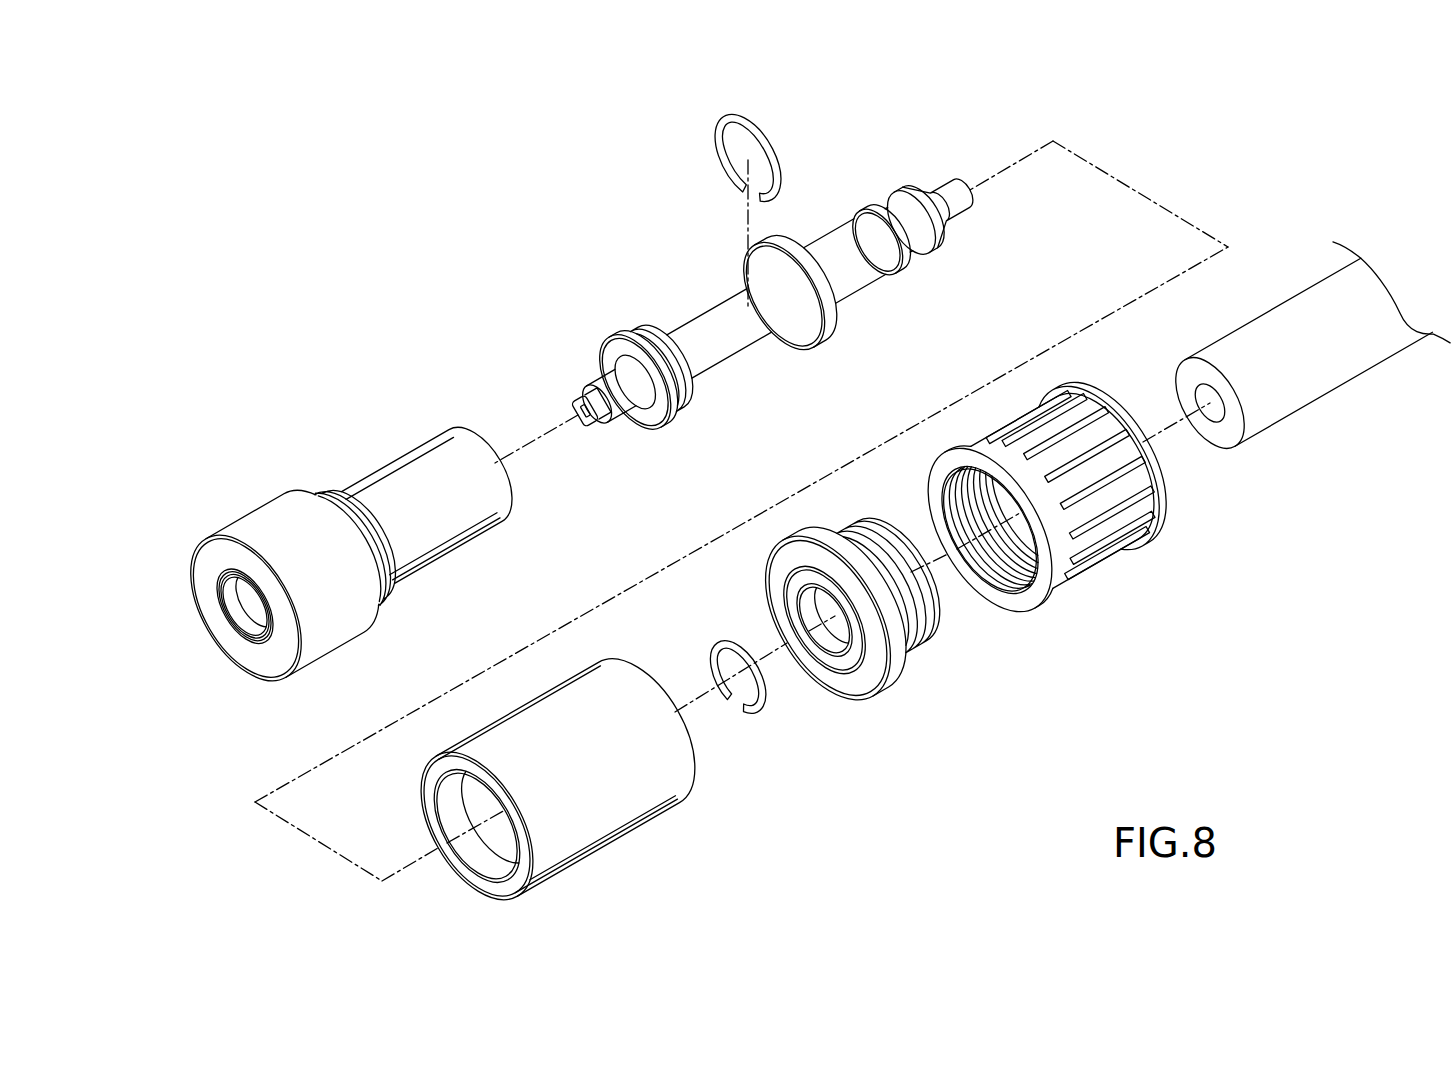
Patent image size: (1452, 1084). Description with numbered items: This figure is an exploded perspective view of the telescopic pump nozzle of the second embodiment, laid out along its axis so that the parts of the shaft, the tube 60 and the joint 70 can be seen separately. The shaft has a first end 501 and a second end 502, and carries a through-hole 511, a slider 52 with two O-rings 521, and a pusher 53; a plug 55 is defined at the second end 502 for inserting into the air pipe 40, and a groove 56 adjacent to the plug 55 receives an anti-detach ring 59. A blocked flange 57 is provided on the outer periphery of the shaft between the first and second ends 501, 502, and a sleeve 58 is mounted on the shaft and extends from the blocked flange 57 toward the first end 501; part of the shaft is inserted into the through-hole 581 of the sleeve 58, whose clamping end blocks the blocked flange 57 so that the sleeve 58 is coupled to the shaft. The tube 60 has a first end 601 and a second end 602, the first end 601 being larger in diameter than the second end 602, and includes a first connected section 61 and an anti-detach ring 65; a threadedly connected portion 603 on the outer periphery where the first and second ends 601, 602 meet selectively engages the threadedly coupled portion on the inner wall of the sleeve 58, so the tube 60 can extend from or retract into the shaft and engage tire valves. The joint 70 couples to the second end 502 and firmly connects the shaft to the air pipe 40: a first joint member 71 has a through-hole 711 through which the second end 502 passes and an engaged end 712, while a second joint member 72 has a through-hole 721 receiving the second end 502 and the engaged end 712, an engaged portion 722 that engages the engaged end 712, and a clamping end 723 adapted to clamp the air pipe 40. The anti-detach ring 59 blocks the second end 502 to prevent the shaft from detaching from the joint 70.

The air pipe 40 is at (1277, 402).
The first end 501 is at (702, 351).
The second end 502 is at (929, 211).
The slider 52 is at (658, 377).
The O-rings 521 is at (672, 393).
The pusher 53 is at (695, 340).
The through-hole 511 is at (596, 422).
The plug 55 is at (951, 238).
The groove 56 is at (898, 262).
The blocked flange 57 is at (806, 332).
The sleeve 58 is at (527, 801).
The through-hole 581 is at (500, 831).
The anti-detach ring 59 is at (762, 710).
The tube 60 is at (297, 497).
The first end 601 is at (205, 508).
The second end 602 is at (437, 410).
The threadedly connected portion 603 is at (334, 499).
The first connected section 61 is at (236, 618).
The anti-detach ring 65 is at (718, 151).
The joint 70 is at (978, 533).
The first joint member 71 is at (845, 639).
The through-hole 711 is at (823, 611).
The engaged end 712 is at (931, 637).
The second joint member 72 is at (1064, 476).
The through-hole 721 is at (1010, 498).
The engaged portion 722 is at (1020, 560).
The clamping end 723 is at (1165, 482).